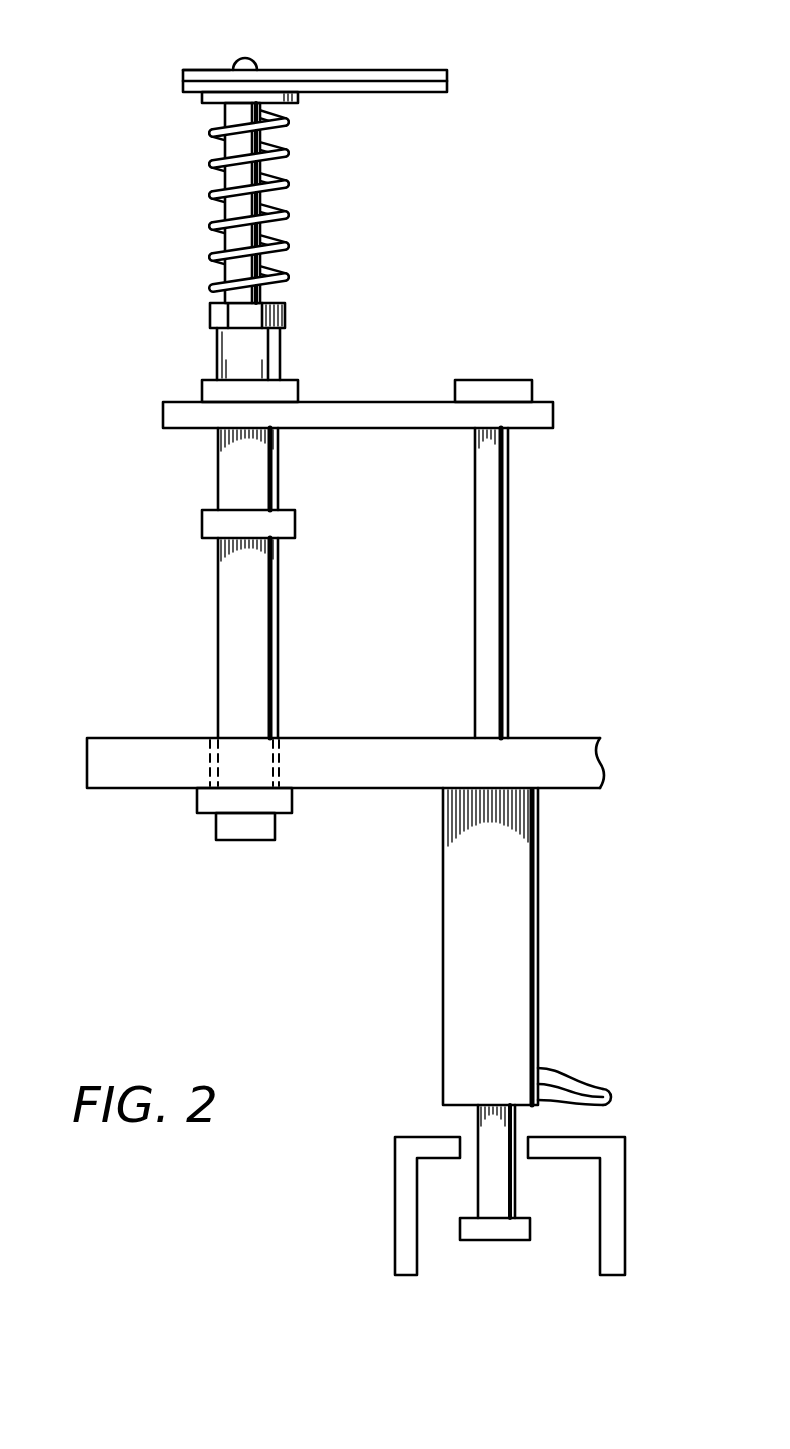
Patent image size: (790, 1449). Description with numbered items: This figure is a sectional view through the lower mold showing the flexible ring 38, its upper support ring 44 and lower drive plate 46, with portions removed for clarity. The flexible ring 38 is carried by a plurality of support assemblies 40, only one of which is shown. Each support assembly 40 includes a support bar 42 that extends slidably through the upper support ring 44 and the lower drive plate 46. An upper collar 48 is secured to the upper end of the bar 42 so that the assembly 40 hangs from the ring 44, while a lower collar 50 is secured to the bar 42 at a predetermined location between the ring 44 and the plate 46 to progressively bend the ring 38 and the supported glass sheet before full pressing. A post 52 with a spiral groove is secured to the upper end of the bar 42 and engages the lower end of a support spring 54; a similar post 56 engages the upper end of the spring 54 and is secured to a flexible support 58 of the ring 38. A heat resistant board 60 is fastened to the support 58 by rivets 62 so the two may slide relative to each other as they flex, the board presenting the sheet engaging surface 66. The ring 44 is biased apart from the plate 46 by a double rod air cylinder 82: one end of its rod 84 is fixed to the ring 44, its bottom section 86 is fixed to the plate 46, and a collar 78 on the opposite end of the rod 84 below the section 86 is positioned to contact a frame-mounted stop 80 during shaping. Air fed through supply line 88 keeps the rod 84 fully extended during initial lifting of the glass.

The flexible ring 38 is at (352, 46).
The support assembly 40 is at (156, 337).
The support bar 42 is at (217, 613).
The upper support ring 44 is at (553, 408).
The lower drive plate 46 is at (133, 790).
The upper collar 48 is at (298, 380).
The lower collar 50 is at (295, 520).
The post 52 is at (213, 282).
The support spring 54 is at (207, 203).
The post 56 is at (217, 113).
The flexible support 58 is at (183, 86).
The heat resistant board 60 is at (218, 68).
The rivet 62 is at (250, 62).
The sheet engaging surface 66 is at (360, 68).
The collar 78 is at (480, 1240).
The stop 80 is at (625, 1158).
The double rod air cylinder 82 is at (543, 1045).
The rod 84 is at (512, 478).
The bottom section 86 is at (538, 925).
The supply line 88 is at (570, 1078).